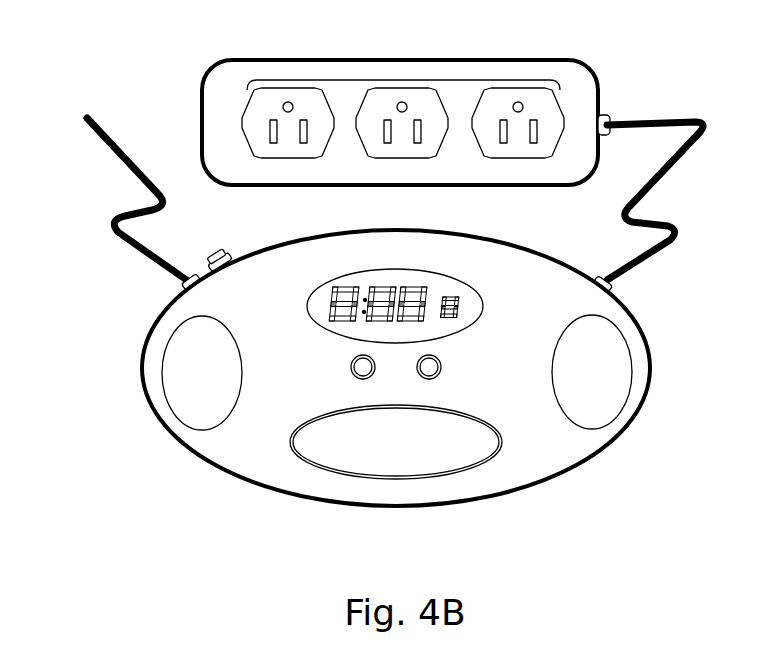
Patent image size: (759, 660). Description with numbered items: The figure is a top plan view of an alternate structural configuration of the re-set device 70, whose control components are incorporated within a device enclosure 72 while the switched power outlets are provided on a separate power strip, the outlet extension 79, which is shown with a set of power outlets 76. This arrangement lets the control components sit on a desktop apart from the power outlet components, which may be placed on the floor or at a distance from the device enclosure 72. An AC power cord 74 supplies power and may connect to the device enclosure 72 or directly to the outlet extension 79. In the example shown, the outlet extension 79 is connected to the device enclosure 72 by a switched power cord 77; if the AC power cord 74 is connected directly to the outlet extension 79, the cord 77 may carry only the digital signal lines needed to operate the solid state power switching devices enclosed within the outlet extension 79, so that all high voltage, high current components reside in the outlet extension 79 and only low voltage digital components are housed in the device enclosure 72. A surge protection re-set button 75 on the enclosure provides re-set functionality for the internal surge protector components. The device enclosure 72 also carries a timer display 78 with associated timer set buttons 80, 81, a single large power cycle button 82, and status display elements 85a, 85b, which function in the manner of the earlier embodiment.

The re-set device 70 is at (137, 86).
The device enclosure 72 is at (248, 485).
The AC power cord 74 is at (103, 145).
The surge protection re-set button 75 is at (218, 252).
The electrical outlet 76 is at (487, 77).
The switched power cord 77 is at (680, 232).
The timer display 78 is at (482, 307).
The outlet extension 79 is at (322, 58).
The timer set button 80 is at (350, 367).
The timer set button 81 is at (442, 367).
The power cycle button 82 is at (392, 480).
The status display element 85a is at (177, 377).
The status display element 85b is at (608, 384).